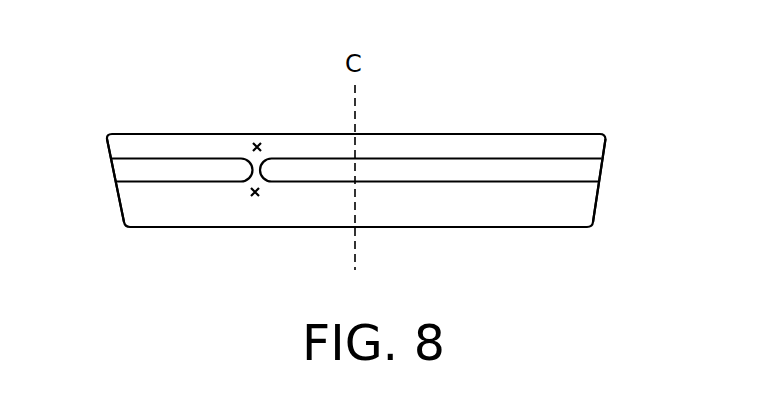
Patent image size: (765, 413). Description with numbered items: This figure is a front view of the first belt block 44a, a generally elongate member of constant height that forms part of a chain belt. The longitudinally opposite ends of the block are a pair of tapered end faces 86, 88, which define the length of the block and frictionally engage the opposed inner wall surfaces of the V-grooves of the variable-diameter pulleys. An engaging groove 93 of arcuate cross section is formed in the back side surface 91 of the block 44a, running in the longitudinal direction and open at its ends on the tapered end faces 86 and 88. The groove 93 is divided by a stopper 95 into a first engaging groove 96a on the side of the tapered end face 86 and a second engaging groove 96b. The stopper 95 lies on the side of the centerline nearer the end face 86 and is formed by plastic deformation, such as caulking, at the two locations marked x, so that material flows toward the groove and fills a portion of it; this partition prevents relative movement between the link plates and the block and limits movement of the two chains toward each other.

The first belt block 44a is at (241, 106).
The engaging groove 93 is at (455, 155).
The stopper 95 is at (265, 155).
The back side surface 91 is at (450, 219).
The tapered end face 86 is at (120, 203).
The tapered end face 88 is at (597, 197).
The first engaging groove 96a is at (147, 181).
The second engaging groove 96b is at (521, 181).